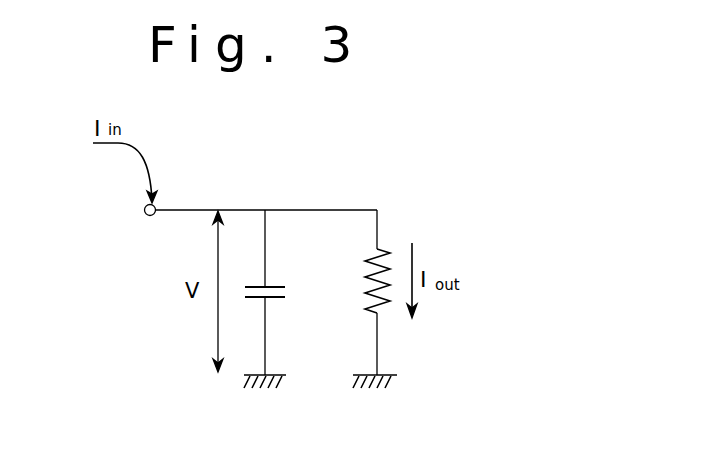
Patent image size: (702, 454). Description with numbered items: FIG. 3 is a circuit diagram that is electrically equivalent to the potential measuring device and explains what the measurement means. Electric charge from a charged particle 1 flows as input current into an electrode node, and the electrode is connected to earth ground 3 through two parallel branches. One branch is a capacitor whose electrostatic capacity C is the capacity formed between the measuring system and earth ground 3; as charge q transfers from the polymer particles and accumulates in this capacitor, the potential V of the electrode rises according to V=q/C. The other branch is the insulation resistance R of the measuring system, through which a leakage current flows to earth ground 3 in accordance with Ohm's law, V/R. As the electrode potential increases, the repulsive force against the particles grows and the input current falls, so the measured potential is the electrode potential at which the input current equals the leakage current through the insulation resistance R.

The charged particle 1 is at (146, 216).
The earth ground 3 is at (396, 375).
The electrostatic capacity of a capacitor C is at (272, 300).
The insulation resistance R is at (368, 282).